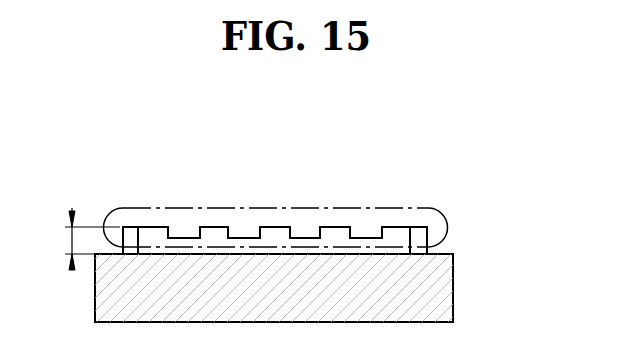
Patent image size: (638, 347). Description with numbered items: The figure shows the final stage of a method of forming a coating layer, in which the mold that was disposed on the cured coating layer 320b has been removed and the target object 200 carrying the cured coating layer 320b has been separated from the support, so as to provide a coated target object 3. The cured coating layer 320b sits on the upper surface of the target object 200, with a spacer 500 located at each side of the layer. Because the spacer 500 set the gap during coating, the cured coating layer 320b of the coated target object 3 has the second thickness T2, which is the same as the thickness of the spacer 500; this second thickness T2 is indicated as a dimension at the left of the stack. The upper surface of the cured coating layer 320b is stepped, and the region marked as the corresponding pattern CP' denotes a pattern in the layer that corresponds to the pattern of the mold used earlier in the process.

The coated target object 3 is at (284, 100).
The corresponding pattern CP' is at (276, 192).
The cured coating layer 320b is at (216, 239).
The spacer 500 is at (419, 232).
The target object 200 is at (445, 289).
The second thickness T2 is at (78, 239).